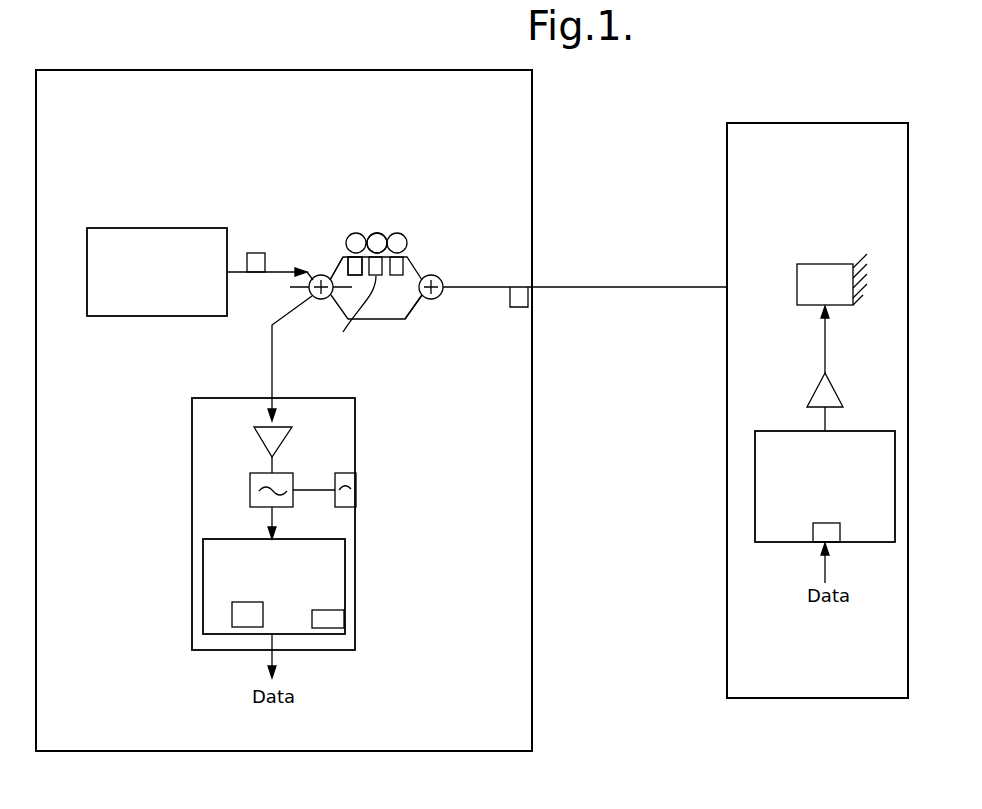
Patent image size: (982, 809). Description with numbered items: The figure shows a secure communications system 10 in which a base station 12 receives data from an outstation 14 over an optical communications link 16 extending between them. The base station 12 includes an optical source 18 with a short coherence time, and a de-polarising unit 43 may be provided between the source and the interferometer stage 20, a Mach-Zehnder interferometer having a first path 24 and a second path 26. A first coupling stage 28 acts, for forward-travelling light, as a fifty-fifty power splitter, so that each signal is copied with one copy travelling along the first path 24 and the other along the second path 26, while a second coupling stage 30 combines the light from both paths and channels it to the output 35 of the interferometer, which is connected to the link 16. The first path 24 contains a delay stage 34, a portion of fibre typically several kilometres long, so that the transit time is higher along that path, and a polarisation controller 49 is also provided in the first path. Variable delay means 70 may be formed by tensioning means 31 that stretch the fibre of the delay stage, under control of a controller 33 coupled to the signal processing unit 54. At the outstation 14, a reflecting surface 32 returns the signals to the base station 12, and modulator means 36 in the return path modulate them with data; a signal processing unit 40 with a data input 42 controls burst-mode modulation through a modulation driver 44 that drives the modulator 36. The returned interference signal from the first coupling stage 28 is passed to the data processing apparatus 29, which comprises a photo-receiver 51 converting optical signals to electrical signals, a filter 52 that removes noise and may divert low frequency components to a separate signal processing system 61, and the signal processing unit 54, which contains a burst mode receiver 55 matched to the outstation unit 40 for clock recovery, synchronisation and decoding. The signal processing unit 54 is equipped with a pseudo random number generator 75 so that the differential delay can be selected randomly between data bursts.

The base station 10 is at (592, 705).
The base station 12 is at (507, 568).
The outstation 14 is at (792, 683).
The optical communications link 16 is at (638, 294).
The optical source 18 is at (142, 232).
The interferometer stage 20 is at (406, 327).
The first path 24 is at (337, 262).
The second path 26 is at (417, 307).
The first coupling stage 28 is at (314, 278).
The data processing apparatus 29 is at (228, 664).
The second coupling stage 30 is at (440, 279).
The tensioning means 31 is at (421, 200).
The reflecting surface 32 is at (853, 272).
The controller 33 is at (344, 326).
The delay stage 34 is at (394, 247).
The output 35 is at (520, 305).
The modulator means 36 is at (797, 278).
The signal processing unit 40 is at (766, 445).
The data input 42 is at (820, 532).
The de-polarising unit 43 is at (257, 253).
The modulation driver 44 is at (815, 398).
The polarisation controller 49 is at (346, 266).
The photo-receiver 51 is at (263, 447).
The filter 52 is at (250, 500).
The signal processing unit 54 is at (223, 560).
The burst mode receiver 55 is at (332, 623).
The separate signal processing system 61 is at (358, 490).
The variable delay means 70 is at (374, 222).
The pseudo random number generator 75 is at (232, 612).